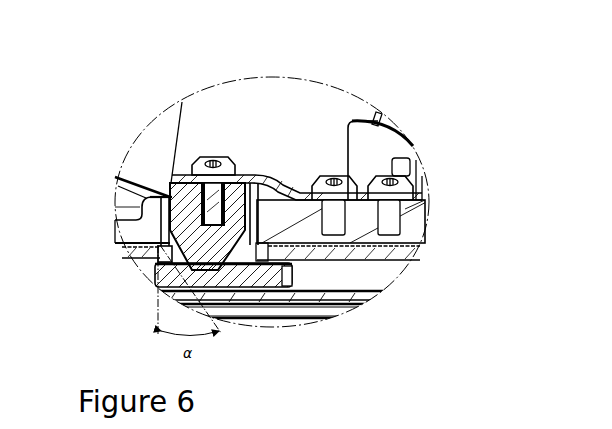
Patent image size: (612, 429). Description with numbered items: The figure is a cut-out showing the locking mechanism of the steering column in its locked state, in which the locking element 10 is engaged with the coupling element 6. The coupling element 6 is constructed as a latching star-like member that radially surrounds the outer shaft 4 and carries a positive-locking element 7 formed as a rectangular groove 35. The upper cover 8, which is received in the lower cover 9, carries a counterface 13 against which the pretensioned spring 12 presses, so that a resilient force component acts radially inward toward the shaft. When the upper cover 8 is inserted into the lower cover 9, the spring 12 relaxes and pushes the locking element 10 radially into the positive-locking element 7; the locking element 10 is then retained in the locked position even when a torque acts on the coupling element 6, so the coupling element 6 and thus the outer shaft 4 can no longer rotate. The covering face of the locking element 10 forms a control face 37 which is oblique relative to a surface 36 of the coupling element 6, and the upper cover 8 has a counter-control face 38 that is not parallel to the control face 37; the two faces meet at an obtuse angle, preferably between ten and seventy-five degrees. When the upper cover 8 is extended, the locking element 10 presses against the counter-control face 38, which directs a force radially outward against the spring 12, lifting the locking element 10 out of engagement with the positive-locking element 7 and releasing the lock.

The outer shaft 4 is at (367, 294).
The coupling element 6 is at (203, 293).
The positive-locking element 7 is at (233, 294).
The upper cover 8 is at (393, 253).
The lower cover 9 is at (413, 223).
The locking element 10 is at (168, 178).
The spring 12 is at (268, 180).
The counterface 13 is at (360, 198).
The rectangular groove 35 is at (263, 296).
The surface of the coupling element 36 is at (298, 292).
The control face 37 is at (158, 254).
The counter-control face 38 is at (143, 237).